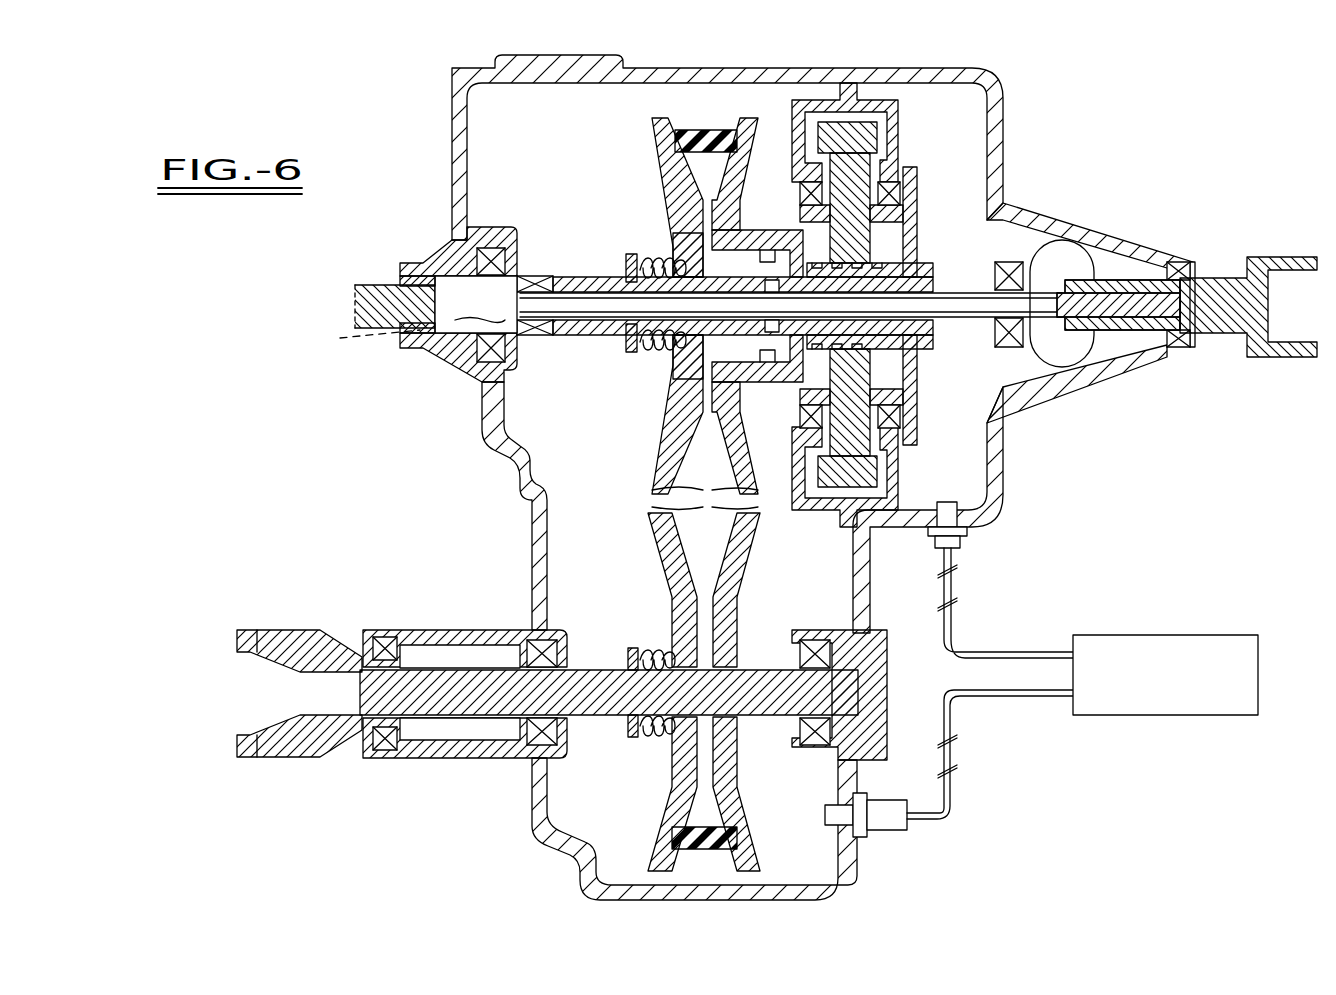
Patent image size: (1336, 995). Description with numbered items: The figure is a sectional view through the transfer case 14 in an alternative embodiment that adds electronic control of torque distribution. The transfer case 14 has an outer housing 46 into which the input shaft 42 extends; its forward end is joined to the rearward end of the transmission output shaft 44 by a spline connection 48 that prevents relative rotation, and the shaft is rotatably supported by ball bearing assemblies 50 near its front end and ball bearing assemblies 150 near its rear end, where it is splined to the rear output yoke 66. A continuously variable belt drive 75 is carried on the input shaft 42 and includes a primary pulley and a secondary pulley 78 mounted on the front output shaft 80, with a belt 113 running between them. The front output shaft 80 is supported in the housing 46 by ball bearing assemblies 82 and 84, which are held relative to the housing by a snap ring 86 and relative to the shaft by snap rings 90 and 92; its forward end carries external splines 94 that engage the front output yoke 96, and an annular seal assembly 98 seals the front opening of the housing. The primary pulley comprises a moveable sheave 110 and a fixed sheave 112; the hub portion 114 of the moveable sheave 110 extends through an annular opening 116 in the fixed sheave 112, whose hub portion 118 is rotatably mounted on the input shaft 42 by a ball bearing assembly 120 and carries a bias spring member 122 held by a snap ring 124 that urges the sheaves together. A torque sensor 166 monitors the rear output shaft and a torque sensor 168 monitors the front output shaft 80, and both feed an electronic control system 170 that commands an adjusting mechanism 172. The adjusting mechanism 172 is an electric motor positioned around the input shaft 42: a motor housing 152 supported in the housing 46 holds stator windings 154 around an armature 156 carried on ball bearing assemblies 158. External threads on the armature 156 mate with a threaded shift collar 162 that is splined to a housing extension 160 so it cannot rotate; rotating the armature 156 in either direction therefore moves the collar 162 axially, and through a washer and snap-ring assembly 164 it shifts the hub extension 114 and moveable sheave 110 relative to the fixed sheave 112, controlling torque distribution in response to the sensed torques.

The transfer case 14 is at (440, 140).
The input shaft 42 is at (458, 304).
The transmission output shaft 44 is at (372, 288).
The outer housing 46 is at (452, 203).
The spline connection 48 is at (354, 331).
The ball bearing assembly 50 is at (458, 356).
The rear output yoke 66 is at (1228, 275).
The continuously variable belt drive 75 is at (679, 483).
The secondary pulley 78 is at (740, 600).
The front output shaft 80 is at (606, 670).
The ball bearing assembly 82 is at (546, 760).
The ball bearing assembly 84 is at (820, 740).
The snap ring 86 is at (558, 733).
The snap ring 90 is at (530, 658).
The snap ring 92 is at (822, 708).
The external splines 94 is at (396, 655).
The front output yoke 96 is at (280, 630).
The annular seal assembly 98 is at (392, 750).
The moveable sheave 110 is at (665, 194).
The fixed sheave 112 is at (742, 228).
The belt 113 is at (657, 167).
The hub portion of moveable sheave 114 is at (673, 255).
The annular opening 116 is at (740, 245).
The hub portion of fixed sheave 118 is at (583, 275).
The ball bearing assembly 120 is at (545, 340).
The bias spring member 122 is at (655, 352).
The snap ring 124 is at (628, 350).
The ball bearing assemblies 150 is at (1012, 345).
The motor housing 152 is at (885, 100).
The stator windings 154 is at (876, 148).
The armature 156 is at (900, 226).
The ball bearing assemblies 158 is at (900, 196).
The housing extension 160 is at (918, 251).
The shift collar 162 is at (960, 345).
The washer and snap-ring assembly 164 is at (790, 352).
The torque sensor 166 is at (960, 534).
The torque sensor 168 is at (885, 820).
The electronic control system 170 is at (1141, 635).
The adjusting mechanism 172 is at (898, 274).